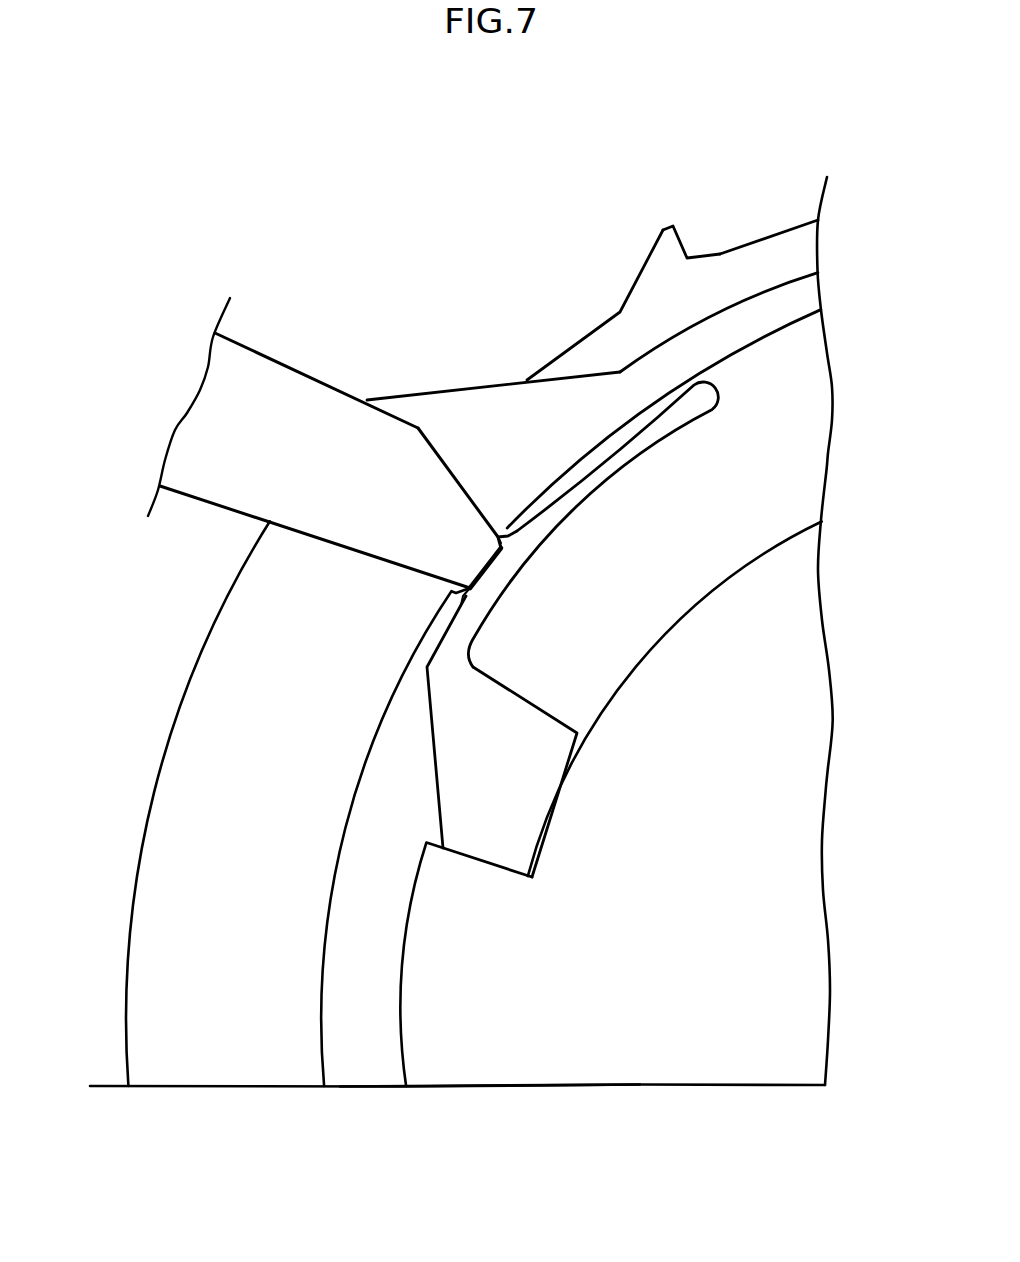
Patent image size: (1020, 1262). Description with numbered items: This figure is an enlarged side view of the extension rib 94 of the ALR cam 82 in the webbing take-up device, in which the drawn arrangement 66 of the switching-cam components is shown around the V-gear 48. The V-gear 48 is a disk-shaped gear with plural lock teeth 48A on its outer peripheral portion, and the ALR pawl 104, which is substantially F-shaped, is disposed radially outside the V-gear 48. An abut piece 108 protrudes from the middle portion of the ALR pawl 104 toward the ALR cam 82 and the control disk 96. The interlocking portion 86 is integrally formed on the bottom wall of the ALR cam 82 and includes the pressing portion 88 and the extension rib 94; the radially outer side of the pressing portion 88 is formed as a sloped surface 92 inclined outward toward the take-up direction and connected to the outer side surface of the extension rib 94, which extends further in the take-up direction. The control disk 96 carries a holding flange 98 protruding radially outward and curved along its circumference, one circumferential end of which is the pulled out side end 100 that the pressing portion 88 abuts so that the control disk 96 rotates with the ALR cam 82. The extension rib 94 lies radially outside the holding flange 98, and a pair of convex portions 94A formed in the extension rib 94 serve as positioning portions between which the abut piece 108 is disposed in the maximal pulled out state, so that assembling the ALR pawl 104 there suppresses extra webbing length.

The rotor 66 is at (378, 128).
The ALR pawl 104 is at (324, 416).
The abut piece 108 is at (318, 378).
The V-gear 48 is at (592, 277).
The lock teeth 48A is at (667, 230).
The ALR cam 82 is at (790, 276).
The sloped surface 92 is at (430, 742).
The control disk 96 is at (404, 955).
The holding flange 98 is at (403, 1040).
The interlocking portion 86 is at (509, 679).
The pressing portion 88 is at (508, 774).
The extension rib 94 is at (506, 651).
The convex portions 94A is at (501, 535).
The pulled out side end 100 is at (477, 853).